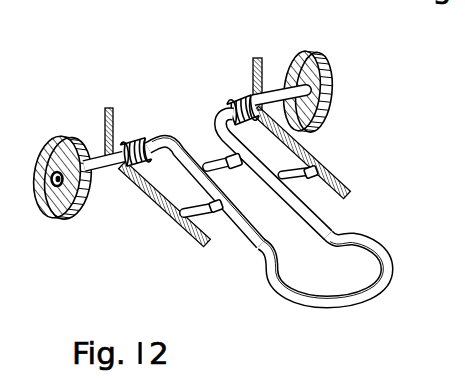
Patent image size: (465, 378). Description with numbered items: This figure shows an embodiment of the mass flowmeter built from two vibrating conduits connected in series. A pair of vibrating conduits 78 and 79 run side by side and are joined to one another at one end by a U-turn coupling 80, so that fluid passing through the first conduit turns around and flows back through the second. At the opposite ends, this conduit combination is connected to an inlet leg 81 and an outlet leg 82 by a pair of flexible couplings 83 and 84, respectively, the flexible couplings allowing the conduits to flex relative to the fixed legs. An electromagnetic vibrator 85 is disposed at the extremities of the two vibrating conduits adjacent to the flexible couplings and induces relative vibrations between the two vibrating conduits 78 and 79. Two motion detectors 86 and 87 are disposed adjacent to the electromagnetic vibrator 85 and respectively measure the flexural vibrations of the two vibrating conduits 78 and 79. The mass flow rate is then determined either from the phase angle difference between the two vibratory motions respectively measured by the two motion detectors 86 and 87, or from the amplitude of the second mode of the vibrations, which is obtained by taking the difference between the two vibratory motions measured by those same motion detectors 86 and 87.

The vibrating conduit 78 is at (256, 233).
The vibrating conduit 79 is at (316, 197).
The U-turn coupling 80 is at (392, 280).
The inlet leg 81 is at (95, 150).
The outlet leg 82 is at (272, 90).
The flexible coupling 83 is at (132, 138).
The flexible coupling 84 is at (243, 107).
The electromagnetic vibrator 85 is at (220, 158).
The motion detector 86 is at (212, 214).
The motion detector 87 is at (293, 168).